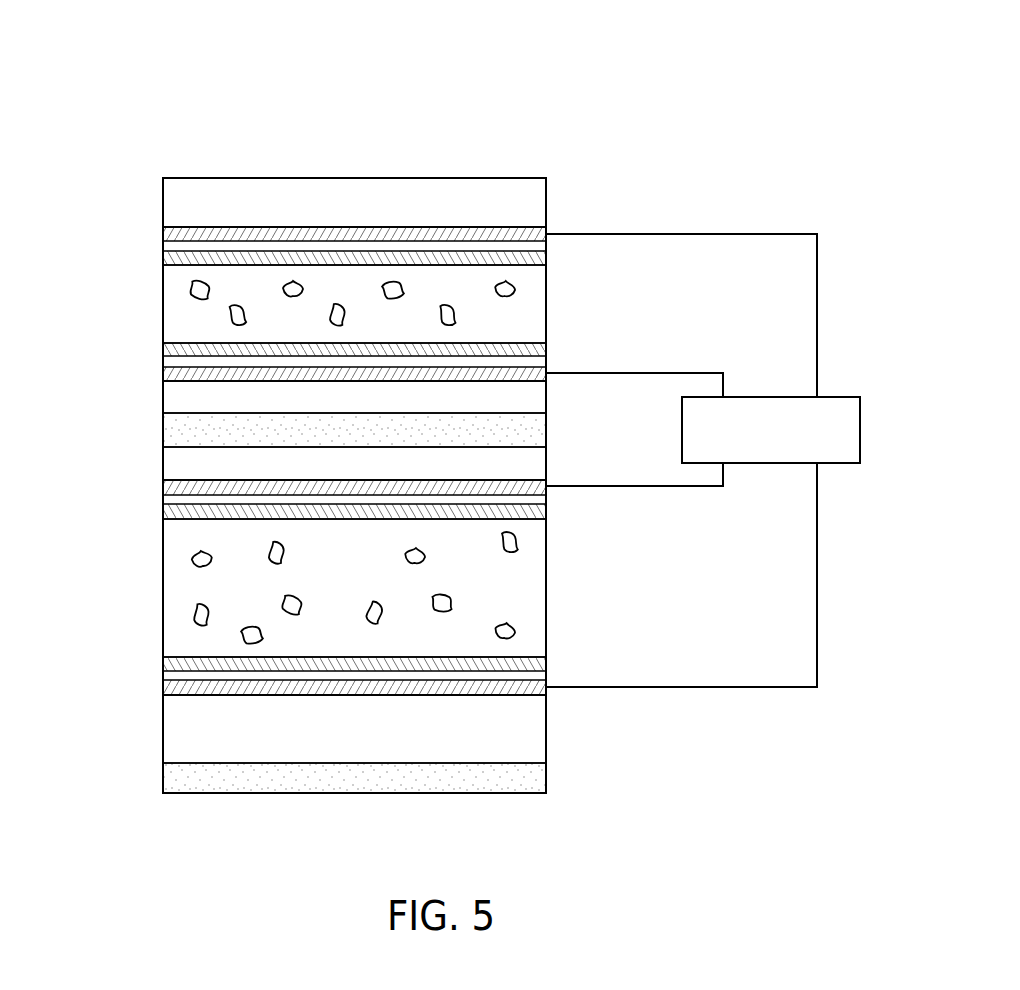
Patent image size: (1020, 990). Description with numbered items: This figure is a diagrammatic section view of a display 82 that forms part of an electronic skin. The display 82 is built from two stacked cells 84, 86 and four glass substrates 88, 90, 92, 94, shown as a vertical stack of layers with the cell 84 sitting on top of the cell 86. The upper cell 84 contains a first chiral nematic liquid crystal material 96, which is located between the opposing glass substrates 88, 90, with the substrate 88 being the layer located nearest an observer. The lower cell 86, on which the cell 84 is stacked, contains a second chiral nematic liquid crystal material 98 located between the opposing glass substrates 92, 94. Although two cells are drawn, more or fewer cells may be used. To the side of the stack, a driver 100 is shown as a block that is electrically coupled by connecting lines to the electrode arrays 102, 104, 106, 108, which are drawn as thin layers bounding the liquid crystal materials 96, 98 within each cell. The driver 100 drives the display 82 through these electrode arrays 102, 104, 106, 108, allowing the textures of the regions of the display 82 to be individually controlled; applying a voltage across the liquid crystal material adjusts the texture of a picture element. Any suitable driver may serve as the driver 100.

The display 82 is at (640, 108).
The cell 84 is at (136, 292).
The cell 86 is at (141, 589).
The glass substrate 88 is at (288, 185).
The glass substrate 90 is at (163, 396).
The glass substrate 92 is at (163, 463).
The glass substrate 94 is at (163, 728).
The first liquid crystal material 96 is at (533, 316).
The second chiral nematic liquid crystal material 98 is at (533, 582).
The driver 100 is at (765, 405).
The electrode array 102 is at (452, 234).
The electrode array 104 is at (163, 375).
The electrode array 106 is at (534, 488).
The electrode array 108 is at (163, 689).